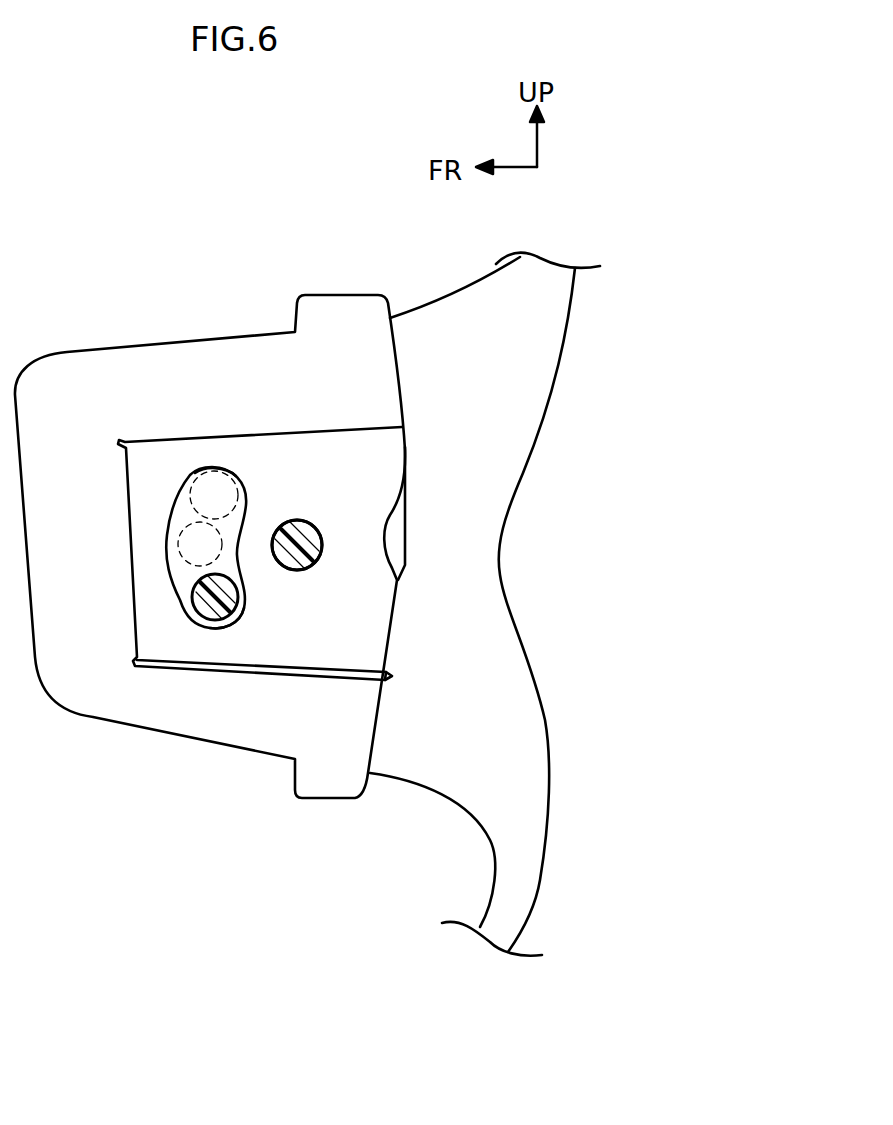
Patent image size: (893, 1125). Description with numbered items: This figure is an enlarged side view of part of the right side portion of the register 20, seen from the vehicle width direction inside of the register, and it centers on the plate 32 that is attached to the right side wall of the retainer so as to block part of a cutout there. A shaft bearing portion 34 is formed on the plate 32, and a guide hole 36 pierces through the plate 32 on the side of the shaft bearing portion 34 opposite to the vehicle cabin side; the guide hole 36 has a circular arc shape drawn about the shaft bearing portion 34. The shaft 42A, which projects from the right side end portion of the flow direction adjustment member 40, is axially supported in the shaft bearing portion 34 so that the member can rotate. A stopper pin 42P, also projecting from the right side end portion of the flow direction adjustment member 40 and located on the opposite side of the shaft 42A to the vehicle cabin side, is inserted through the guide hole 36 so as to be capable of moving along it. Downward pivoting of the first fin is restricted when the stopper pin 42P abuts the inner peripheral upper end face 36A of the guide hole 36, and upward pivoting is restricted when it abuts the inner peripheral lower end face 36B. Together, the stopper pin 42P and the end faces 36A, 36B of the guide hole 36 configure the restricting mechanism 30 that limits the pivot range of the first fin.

The register 20 is at (505, 670).
The restricting mechanism 30 is at (192, 636).
The plate 32 is at (406, 448).
The shaft bearing portion 34 is at (291, 523).
The guide hole 36 is at (181, 495).
The inner peripheral upper end face 36A is at (227, 486).
The inner peripheral lower end face 36B is at (231, 600).
The flow direction adjustment member 40 is at (190, 587).
The shaft 42A is at (298, 570).
The stopper pin 42P is at (200, 507).